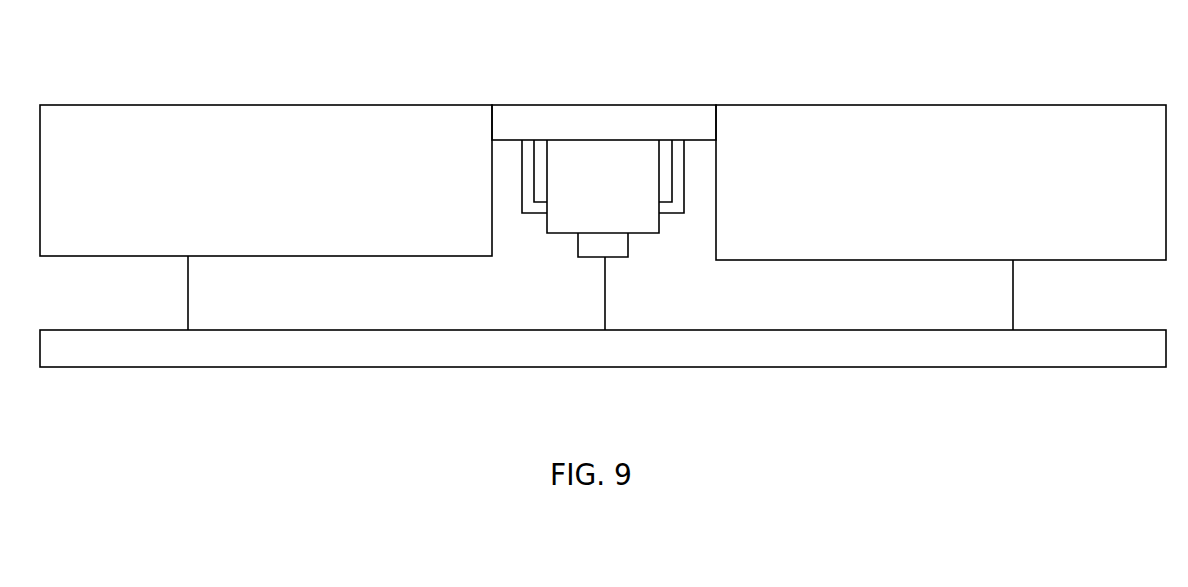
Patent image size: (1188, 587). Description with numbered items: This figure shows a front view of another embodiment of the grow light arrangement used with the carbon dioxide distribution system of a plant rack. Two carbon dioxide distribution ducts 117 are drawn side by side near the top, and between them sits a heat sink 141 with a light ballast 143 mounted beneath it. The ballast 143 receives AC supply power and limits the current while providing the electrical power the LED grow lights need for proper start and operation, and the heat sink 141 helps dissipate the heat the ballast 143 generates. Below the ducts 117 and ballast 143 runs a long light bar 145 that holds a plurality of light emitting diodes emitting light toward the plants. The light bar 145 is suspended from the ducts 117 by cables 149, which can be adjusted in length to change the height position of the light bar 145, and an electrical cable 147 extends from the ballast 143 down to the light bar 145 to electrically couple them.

The carbon dioxide distribution duct 117 is at (257, 120).
The heat sink 141 is at (610, 120).
The light ballast 143 is at (571, 208).
The light bar 145 is at (285, 353).
The electrical cable 147 is at (605, 283).
The cable 149 is at (187, 280).